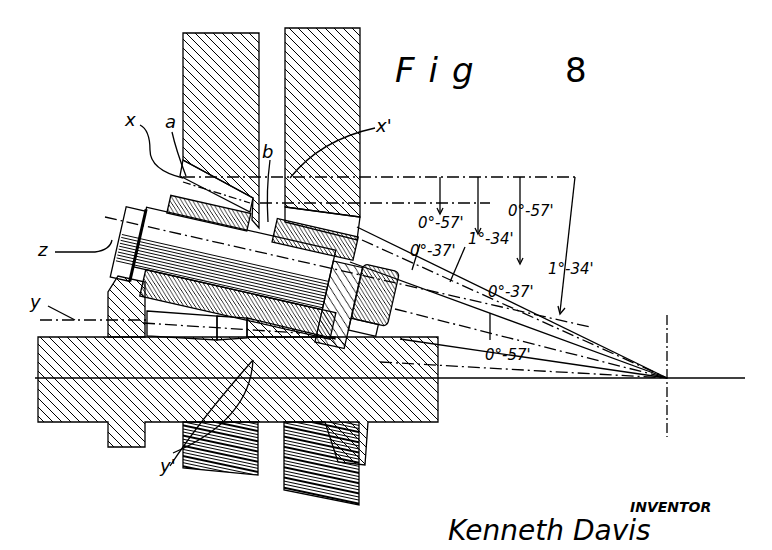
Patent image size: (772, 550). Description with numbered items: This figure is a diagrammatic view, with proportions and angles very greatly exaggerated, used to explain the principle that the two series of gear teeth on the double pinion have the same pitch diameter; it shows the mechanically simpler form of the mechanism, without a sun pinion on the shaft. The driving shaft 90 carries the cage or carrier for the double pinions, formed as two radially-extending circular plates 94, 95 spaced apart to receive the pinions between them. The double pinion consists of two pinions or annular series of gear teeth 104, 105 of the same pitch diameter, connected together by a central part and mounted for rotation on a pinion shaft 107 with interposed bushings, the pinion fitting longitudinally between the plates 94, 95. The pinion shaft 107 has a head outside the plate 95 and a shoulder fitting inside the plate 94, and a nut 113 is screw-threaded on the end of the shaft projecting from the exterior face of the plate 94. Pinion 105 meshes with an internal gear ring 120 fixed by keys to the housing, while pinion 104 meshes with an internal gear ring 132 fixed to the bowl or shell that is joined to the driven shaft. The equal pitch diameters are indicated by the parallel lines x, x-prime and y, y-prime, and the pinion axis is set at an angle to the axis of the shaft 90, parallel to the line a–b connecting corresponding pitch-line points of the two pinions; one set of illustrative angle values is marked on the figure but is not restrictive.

The internal gear ring 132 is at (206, 88).
The internal gear ring 120 is at (330, 104).
The shaft 90 is at (62, 408).
The circular plate 95 is at (124, 300).
The pinion 104 is at (160, 196).
The pinion 105 is at (360, 262).
The pinion shaft 107 is at (150, 232).
The nut 113 is at (380, 305).
The circular plate 94 is at (355, 330).